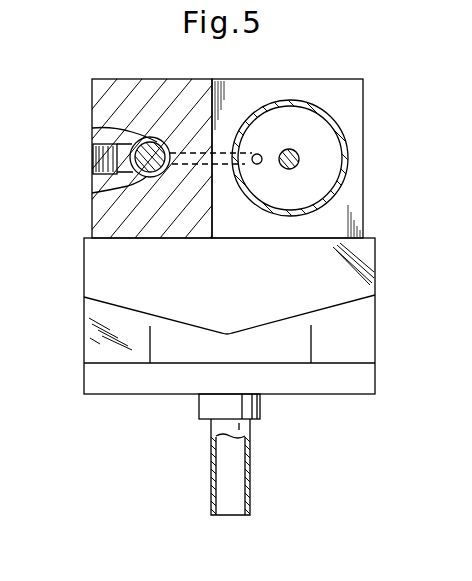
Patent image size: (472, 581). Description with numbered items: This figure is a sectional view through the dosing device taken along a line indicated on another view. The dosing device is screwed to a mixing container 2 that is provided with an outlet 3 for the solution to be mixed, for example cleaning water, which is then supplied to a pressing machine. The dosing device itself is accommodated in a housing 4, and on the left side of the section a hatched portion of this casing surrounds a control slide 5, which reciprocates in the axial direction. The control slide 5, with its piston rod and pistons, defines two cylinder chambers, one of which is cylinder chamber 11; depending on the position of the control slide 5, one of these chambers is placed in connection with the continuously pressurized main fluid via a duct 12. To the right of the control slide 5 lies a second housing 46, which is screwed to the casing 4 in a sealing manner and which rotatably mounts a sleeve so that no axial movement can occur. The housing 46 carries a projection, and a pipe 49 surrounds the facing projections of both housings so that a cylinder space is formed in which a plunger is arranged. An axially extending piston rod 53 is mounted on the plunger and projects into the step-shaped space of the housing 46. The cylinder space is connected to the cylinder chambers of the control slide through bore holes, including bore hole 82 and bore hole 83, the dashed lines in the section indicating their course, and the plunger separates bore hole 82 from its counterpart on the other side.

The mixing container 2 is at (367, 322).
The outlet 3 is at (252, 450).
The housing 4 is at (109, 86).
The control slide 5 is at (92, 193).
The cylinder chamber 11 is at (92, 128).
The duct 12 is at (94, 160).
The housing 46 is at (323, 90).
The pipe 49 is at (338, 119).
The piston rod 53 is at (291, 168).
The bore hole 82 is at (261, 155).
The bore hole 83 is at (224, 163).